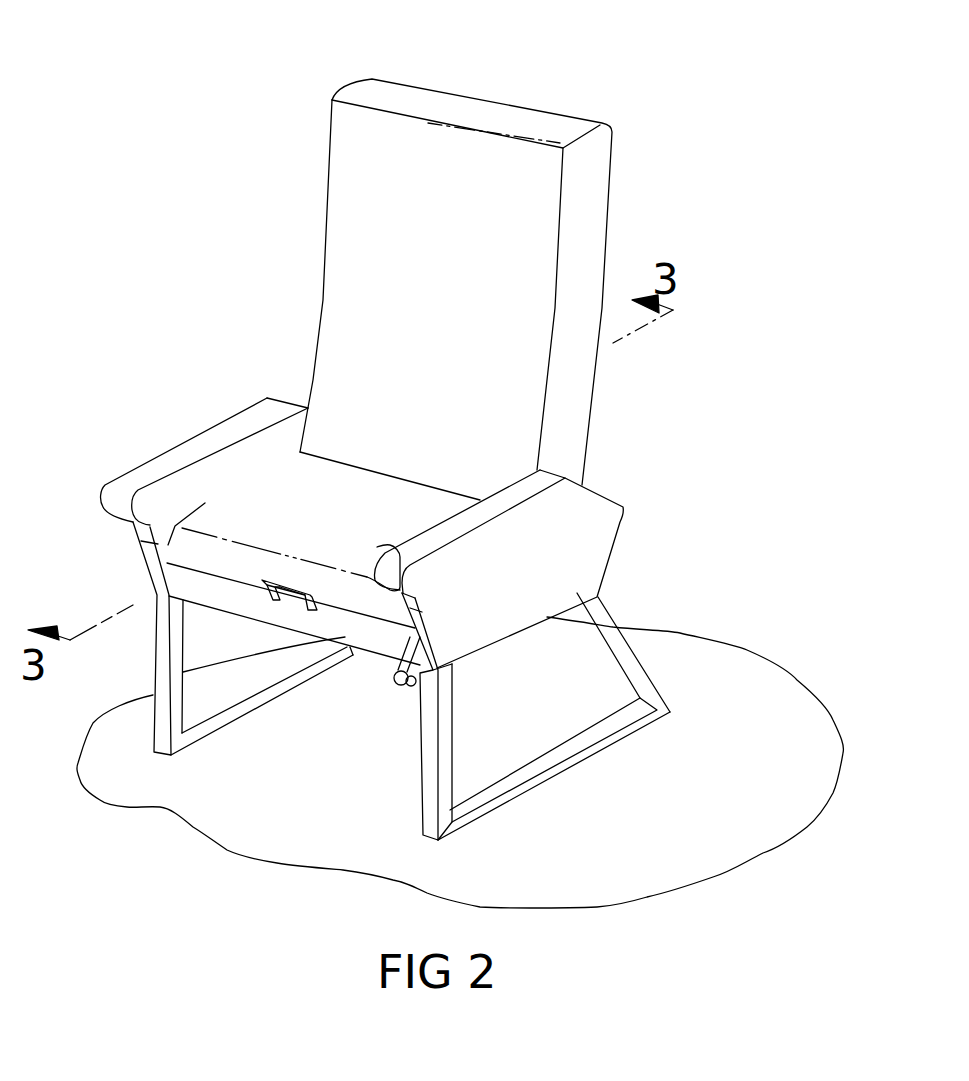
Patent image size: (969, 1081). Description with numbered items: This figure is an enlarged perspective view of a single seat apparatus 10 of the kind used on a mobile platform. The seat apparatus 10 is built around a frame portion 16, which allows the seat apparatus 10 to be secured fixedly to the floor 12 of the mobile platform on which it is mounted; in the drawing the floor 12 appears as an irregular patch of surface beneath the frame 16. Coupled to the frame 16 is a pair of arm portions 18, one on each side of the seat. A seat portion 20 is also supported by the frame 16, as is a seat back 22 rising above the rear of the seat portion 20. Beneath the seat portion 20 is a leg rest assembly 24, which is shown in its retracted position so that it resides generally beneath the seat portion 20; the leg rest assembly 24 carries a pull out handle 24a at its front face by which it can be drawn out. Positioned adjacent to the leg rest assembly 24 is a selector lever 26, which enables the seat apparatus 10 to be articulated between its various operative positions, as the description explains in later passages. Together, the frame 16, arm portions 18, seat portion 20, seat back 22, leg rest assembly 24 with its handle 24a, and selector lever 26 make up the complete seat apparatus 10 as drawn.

The seat apparatus 10 is at (223, 113).
The floor 12 is at (690, 857).
The frame portion 16 is at (653, 675).
The arm portions 18 is at (172, 460).
The seat portion 20 is at (288, 487).
The seat back 22 is at (360, 230).
The leg rest assembly 24 is at (367, 653).
The pull out handle 24a is at (310, 610).
The selector lever 26 is at (393, 682).